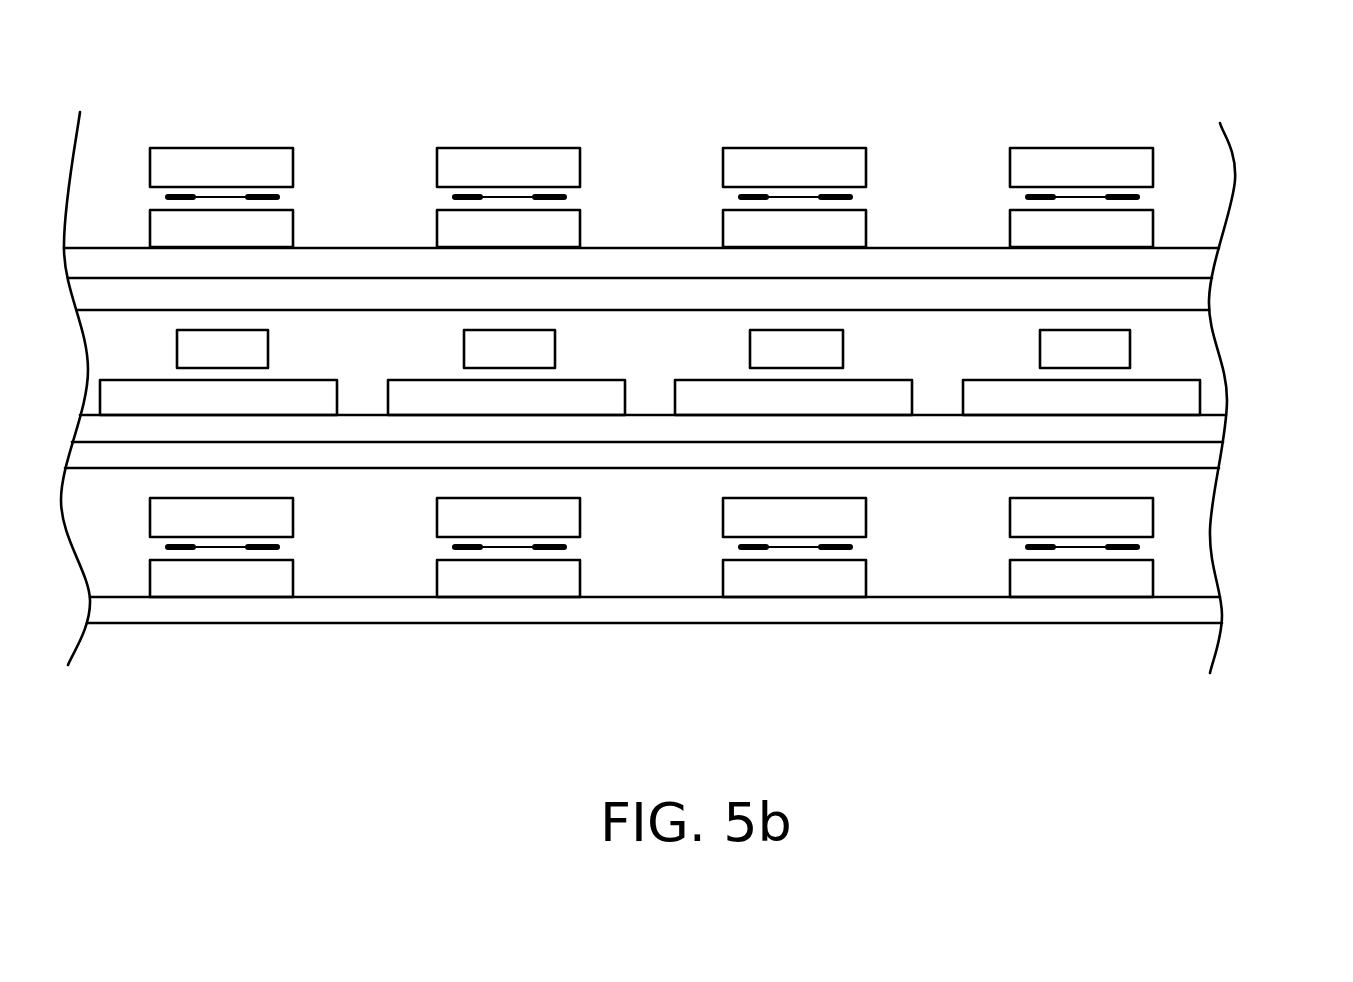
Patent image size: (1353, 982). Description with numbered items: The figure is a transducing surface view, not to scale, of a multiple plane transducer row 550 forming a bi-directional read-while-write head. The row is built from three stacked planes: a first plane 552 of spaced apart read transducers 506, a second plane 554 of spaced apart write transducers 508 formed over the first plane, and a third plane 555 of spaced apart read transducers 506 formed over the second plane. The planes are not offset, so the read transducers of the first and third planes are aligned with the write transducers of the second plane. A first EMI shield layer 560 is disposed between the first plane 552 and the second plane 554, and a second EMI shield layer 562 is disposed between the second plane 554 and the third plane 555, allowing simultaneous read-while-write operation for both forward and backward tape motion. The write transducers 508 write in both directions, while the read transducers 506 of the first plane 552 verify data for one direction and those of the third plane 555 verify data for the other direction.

The read transducers 506 is at (283, 148).
The write transducers 508 is at (307, 380).
The multiple plane transducer row 550 is at (699, 441).
The first plane 552 is at (1242, 498).
The second plane 554 is at (1242, 330).
The third plane 555 is at (1242, 148).
The first EMI shield layer 560 is at (1202, 455).
The second EMI shield layer 562 is at (1183, 293).